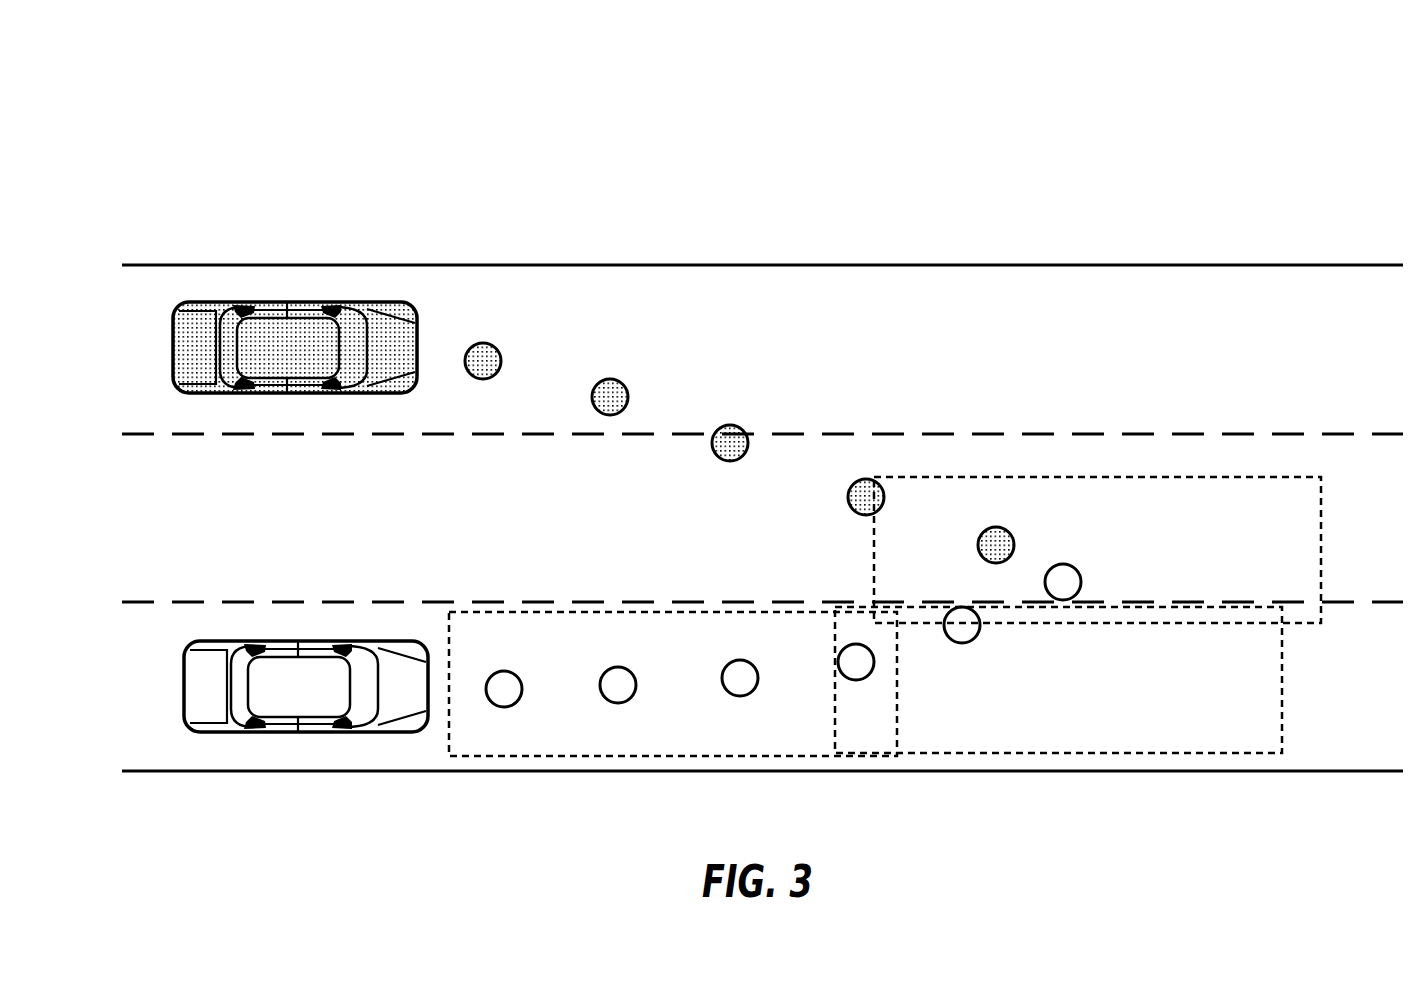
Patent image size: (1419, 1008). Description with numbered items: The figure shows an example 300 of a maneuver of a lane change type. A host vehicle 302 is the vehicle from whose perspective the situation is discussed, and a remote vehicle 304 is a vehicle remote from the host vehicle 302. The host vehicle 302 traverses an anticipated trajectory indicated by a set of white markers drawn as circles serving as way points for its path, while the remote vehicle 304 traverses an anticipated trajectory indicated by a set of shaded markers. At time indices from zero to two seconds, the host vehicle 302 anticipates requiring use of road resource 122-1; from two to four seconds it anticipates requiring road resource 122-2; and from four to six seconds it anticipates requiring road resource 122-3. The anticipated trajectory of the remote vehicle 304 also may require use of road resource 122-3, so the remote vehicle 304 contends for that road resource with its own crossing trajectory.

The example of a maneuver of a lane change type 300 is at (233, 58).
The host vehicle 302 is at (253, 762).
The remote vehicle 304 is at (228, 426).
The road resource 122-1 is at (649, 749).
The road resource 122-2 is at (1034, 745).
The road resource 122-3 is at (1074, 507).